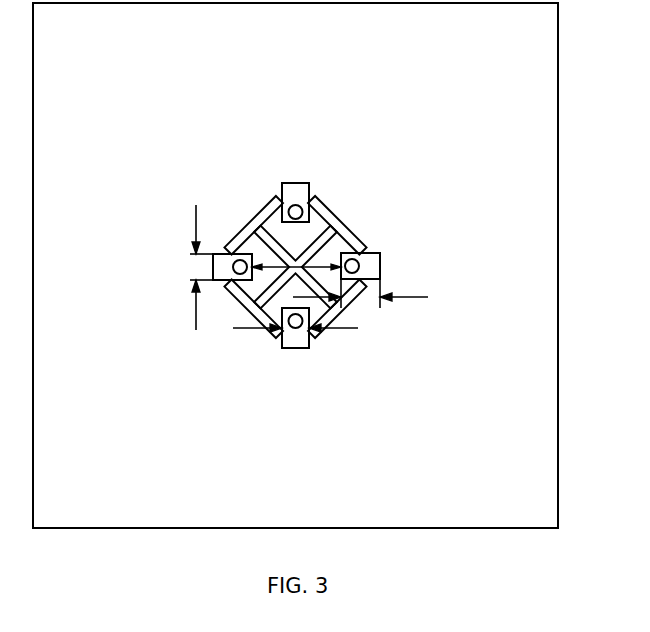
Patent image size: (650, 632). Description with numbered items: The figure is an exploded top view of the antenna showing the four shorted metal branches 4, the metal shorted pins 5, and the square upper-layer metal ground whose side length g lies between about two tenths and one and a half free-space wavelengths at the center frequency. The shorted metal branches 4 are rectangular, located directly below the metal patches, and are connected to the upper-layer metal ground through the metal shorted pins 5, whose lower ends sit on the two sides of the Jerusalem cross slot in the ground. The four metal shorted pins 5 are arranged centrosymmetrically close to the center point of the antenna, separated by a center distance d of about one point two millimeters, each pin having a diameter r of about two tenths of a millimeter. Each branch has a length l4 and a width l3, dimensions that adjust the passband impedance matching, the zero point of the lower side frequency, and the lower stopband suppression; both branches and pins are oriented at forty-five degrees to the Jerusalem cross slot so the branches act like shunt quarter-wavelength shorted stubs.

The shorted metal branch 4 is at (296, 197).
The metal shorted pin 5 is at (232, 247).
The side length of the dielectric substrates and metal grounds g is at (44, 528).
The center distance of the metal shorted pins d is at (296, 242).
The width of the shorted metal branch l3 is at (177, 267).
The length of the shorted metal branch l4 is at (362, 281).
The diameter of the metal shorted pin r is at (295, 345).